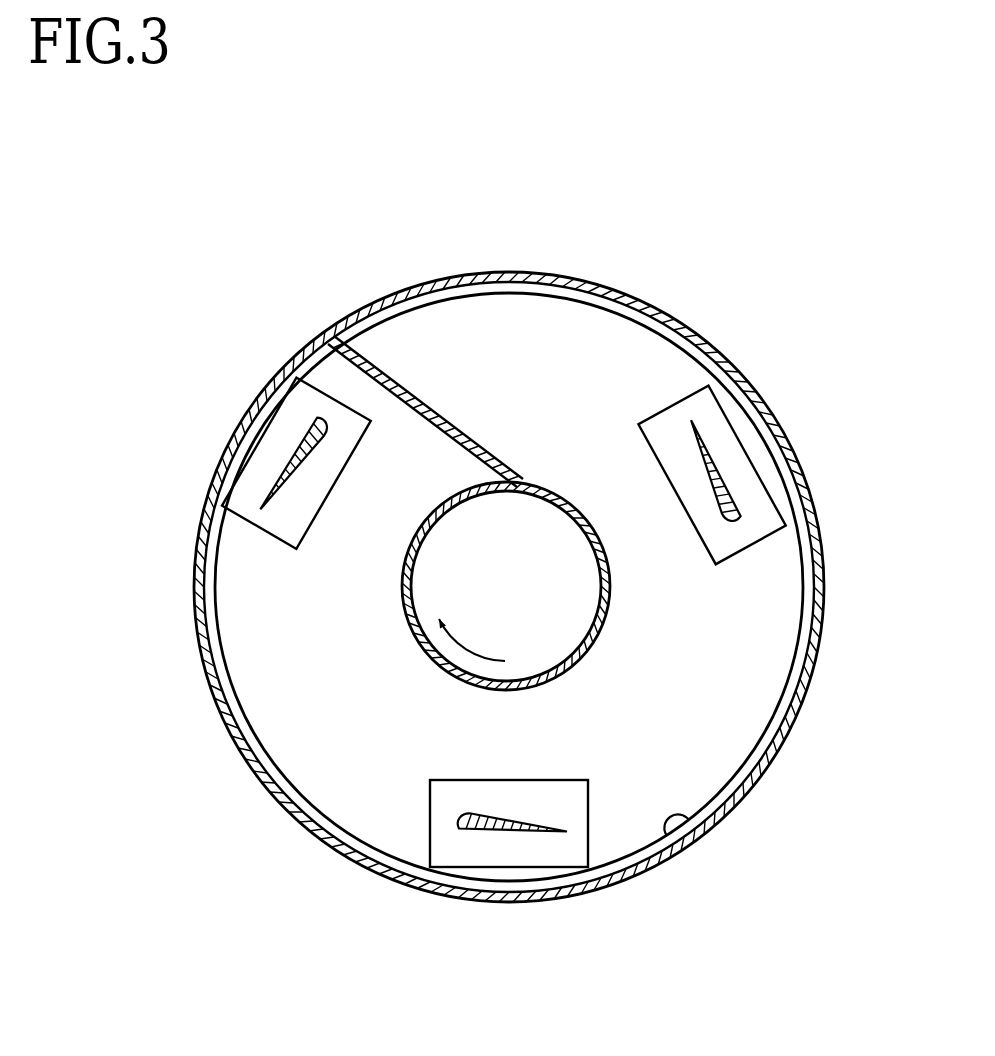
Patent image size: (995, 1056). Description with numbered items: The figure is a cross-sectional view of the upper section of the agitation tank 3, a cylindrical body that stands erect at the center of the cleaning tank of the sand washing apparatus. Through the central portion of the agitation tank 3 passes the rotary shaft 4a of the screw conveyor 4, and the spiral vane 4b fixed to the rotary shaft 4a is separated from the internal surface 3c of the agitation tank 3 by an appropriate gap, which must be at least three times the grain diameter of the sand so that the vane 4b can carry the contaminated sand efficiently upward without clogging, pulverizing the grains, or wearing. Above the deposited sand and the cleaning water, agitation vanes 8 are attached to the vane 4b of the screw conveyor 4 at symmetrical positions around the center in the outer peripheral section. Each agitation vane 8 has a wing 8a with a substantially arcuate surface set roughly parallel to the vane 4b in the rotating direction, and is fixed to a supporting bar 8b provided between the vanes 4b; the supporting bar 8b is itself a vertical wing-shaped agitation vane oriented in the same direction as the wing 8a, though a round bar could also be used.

The agitation tank 3 is at (752, 801).
The internal surface 3c is at (692, 833).
The screw conveyor 4 is at (598, 297).
The rotary shaft 4a is at (410, 627).
The spiral vane 4b is at (747, 657).
The agitation vane 8 is at (504, 636).
The wing 8a is at (255, 528).
The supporting bar 8b is at (292, 452).